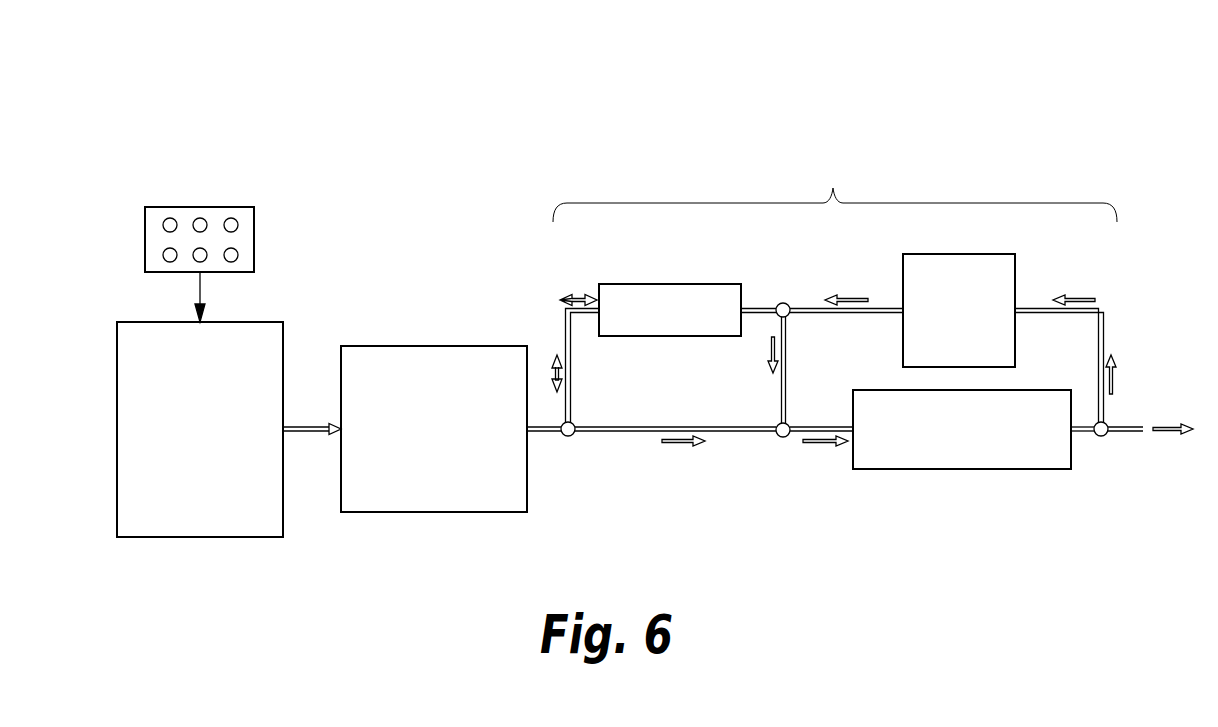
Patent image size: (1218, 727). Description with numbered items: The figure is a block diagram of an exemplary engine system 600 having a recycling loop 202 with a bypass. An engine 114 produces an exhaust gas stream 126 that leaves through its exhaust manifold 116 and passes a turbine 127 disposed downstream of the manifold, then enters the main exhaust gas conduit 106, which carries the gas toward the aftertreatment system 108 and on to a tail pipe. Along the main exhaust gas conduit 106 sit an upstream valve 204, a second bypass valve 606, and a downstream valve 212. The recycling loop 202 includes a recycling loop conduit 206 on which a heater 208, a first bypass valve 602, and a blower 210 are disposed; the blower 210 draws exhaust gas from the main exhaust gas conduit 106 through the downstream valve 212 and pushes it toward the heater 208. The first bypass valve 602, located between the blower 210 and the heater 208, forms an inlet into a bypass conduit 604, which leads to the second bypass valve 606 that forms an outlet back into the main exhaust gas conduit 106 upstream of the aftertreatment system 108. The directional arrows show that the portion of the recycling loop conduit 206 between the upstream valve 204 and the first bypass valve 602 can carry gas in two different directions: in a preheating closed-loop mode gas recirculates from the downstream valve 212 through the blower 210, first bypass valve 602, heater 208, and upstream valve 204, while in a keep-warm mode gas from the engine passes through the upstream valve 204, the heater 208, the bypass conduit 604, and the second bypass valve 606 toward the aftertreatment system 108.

The engine system 600 is at (290, 127).
The engine 114 is at (145, 236).
The exhaust manifold 116 is at (160, 538).
The exhaust gas stream 126 is at (312, 433).
The turbine 127 is at (369, 346).
The upstream valve 204 is at (568, 437).
The main exhaust gas conduit 106 is at (658, 425).
The recycling loop conduit 206 is at (764, 305).
The heater 208 is at (626, 284).
The first bypass valve 602 is at (790, 302).
The bypass conduit 604 is at (780, 400).
The second bypass valve 606 is at (782, 438).
The aftertreatment system 108 is at (890, 390).
The blower 210 is at (1016, 268).
The downstream valve 212 is at (1105, 437).
The recycling loop 202 is at (835, 188).